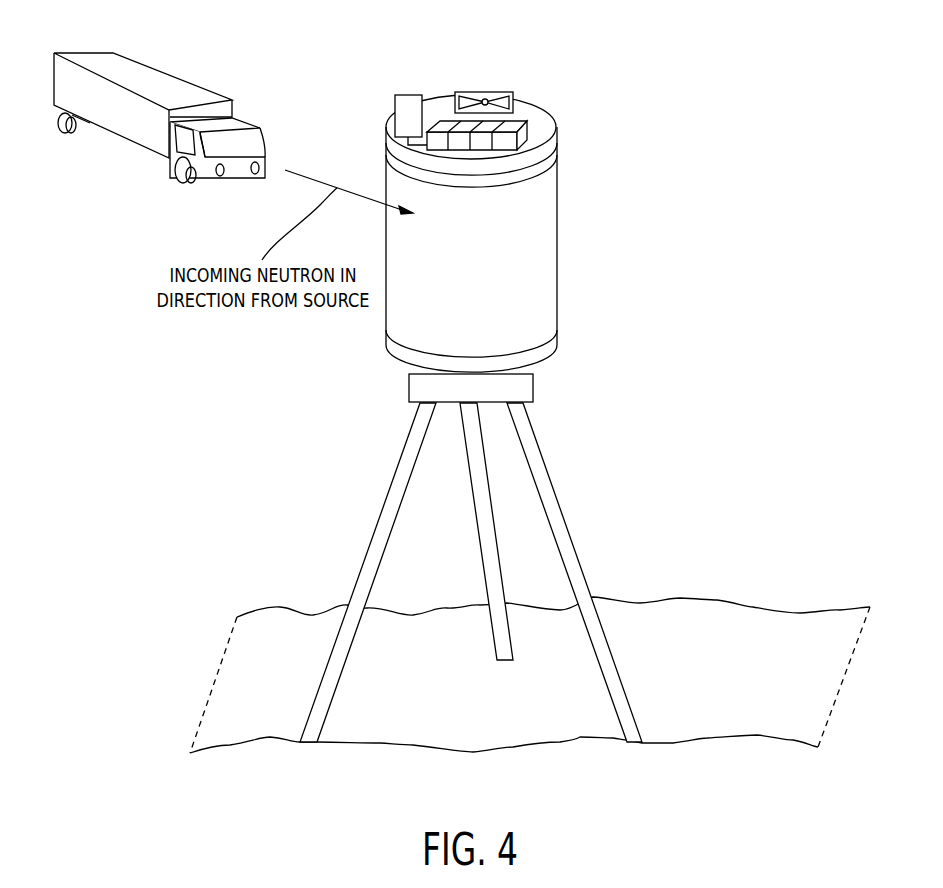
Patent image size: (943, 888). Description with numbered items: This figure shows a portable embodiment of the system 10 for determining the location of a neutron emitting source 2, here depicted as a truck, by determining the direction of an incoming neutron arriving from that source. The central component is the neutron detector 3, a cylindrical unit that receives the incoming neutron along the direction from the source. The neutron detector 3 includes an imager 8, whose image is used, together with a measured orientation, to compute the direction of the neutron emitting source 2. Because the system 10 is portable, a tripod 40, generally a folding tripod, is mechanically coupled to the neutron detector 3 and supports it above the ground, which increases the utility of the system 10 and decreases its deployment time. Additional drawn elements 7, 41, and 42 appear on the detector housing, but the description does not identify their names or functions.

The neutron emitting source 2 is at (143, 65).
The neutron detector 3 is at (560, 255).
The bottom end cap 7 is at (547, 345).
The imager 8 is at (550, 148).
The system 10 is at (675, 118).
The tripod 40 is at (543, 460).
The electronics module 41 is at (412, 92).
The communication module 42 is at (483, 92).